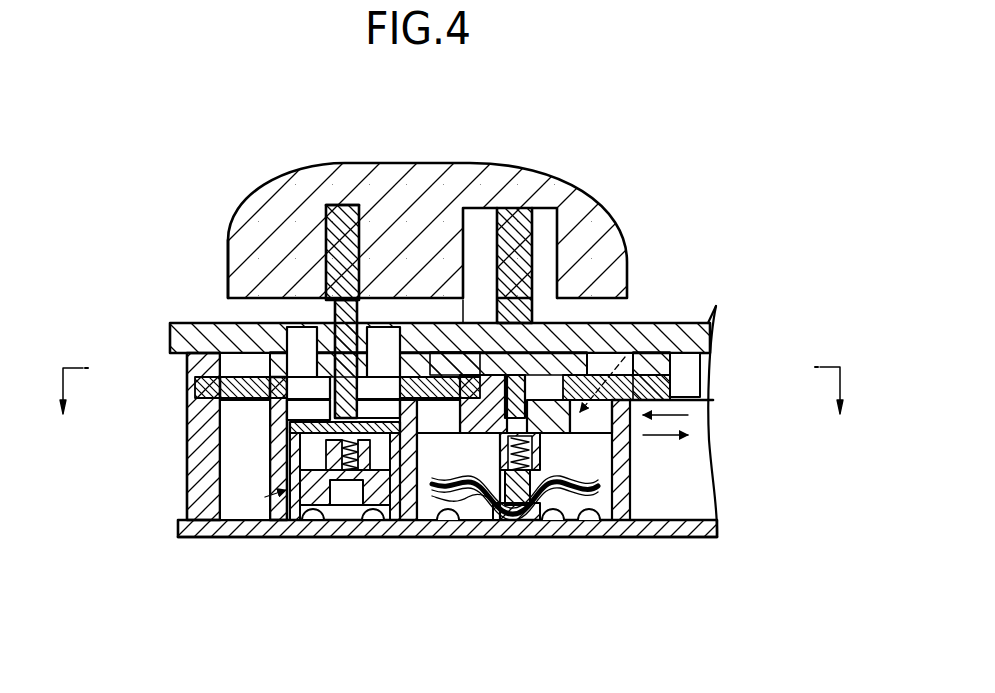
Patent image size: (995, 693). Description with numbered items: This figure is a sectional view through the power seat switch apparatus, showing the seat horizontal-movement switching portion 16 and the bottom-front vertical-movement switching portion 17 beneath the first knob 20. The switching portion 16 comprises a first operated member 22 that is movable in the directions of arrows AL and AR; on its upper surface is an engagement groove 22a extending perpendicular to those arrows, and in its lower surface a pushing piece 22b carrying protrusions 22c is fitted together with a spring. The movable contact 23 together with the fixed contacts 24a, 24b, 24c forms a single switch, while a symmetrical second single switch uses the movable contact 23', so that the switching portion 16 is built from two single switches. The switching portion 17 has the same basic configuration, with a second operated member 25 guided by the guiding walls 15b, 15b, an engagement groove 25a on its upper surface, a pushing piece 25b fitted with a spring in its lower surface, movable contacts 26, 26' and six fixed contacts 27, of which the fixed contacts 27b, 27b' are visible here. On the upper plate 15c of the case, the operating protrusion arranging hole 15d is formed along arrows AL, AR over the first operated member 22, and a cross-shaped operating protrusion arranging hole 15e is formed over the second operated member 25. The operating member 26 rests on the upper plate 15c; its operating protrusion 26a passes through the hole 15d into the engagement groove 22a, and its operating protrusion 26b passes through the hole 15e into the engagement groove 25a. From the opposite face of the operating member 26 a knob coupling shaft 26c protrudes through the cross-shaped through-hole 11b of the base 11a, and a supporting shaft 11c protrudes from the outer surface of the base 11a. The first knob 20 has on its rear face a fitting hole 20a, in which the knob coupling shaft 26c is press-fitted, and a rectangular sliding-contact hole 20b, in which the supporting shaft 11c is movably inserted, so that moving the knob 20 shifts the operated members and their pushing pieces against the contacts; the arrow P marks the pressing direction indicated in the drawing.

The first knob 20 is at (605, 205).
The fitting hole 20a is at (340, 204).
The rectangular sliding-contact hole 20b is at (548, 208).
The base 11a is at (172, 327).
The cross-shaped through-hole 11b is at (232, 262).
The supporting shaft 11c is at (560, 258).
The guiding wall 15b is at (310, 325).
The upper plate 15c is at (195, 385).
The operating protrusion arranging hole 15d is at (482, 392).
The cross-shaped operating protrusion arranging hole 15e is at (240, 326).
The seat horizontal-movement switching portion 16 is at (665, 400).
The bottom-front vertical-movement switching portion 17 is at (240, 538).
The first operated member 22 is at (657, 323).
The engagement groove 22a is at (618, 376).
The pushing piece 22b is at (497, 470).
The protrusion 22c is at (493, 520).
The movable contact 23 is at (566, 489).
The movable contact 23' is at (568, 504).
The fixed contact 24a is at (557, 523).
The fixed contact 24b is at (460, 522).
The fixed contact 24c is at (606, 538).
The second operated member 25 is at (205, 500).
The engagement groove 25a is at (200, 440).
The pushing piece 25b is at (345, 520).
The operating member 26 is at (356, 367).
The operating protrusion 26a is at (470, 345).
The operating protrusion 26b is at (380, 398).
The knob coupling shaft 26c is at (312, 340).
The movable contact 26' is at (405, 515).
The fixed contacts 27 is at (330, 520).
The fixed contact 27b is at (294, 581).
The fixed contact 27b' is at (384, 569).
The pressing direction P is at (449, 407).
The arrow AL is at (690, 408).
The arrow AR is at (700, 440).